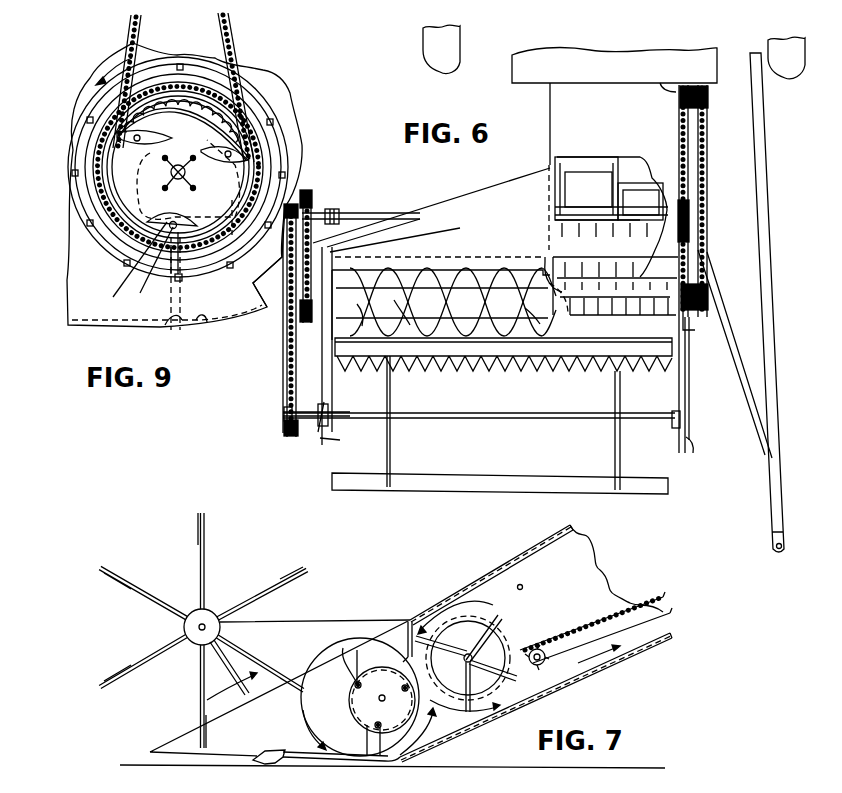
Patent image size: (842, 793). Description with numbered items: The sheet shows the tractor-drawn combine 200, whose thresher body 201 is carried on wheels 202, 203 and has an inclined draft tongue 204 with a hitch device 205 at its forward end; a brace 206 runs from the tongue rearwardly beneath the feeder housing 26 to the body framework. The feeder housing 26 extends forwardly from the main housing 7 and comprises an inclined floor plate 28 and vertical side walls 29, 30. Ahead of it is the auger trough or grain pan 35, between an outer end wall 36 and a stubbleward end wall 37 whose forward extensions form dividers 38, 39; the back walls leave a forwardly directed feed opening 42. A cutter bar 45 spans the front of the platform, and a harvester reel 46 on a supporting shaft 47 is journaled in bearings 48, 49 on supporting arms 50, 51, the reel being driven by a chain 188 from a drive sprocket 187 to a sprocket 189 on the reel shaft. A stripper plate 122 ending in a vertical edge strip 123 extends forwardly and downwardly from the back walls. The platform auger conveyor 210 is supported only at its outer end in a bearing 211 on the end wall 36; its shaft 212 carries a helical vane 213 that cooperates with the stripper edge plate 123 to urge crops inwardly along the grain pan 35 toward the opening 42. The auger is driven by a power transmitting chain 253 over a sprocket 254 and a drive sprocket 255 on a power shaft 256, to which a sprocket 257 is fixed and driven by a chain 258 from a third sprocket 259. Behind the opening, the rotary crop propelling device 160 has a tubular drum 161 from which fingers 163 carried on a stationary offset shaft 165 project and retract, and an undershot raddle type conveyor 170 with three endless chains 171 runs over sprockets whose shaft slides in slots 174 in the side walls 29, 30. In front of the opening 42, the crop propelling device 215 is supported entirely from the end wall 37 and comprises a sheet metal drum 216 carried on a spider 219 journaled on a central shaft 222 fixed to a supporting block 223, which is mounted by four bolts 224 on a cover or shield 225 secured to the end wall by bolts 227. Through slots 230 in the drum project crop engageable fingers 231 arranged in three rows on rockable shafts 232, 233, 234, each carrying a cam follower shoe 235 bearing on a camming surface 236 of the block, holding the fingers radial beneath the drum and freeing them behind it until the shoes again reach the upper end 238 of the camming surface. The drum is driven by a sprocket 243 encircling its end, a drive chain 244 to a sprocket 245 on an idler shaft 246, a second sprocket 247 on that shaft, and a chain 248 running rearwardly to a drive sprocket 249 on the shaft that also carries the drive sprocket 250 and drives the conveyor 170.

In FIG. 6, the feeder housing 26 is at (560, 112).
In FIG. 7, the feeder housing 26 is at (533, 548).
In FIG. 7, the floor plate 28 is at (615, 652).
In FIG. 6, the side wall 29 is at (549, 155).
In FIG. 7, the side wall 29 is at (598, 563).
In FIG. 6, the side wall 30 is at (690, 126).
In FIG. 9, the auger trough 35 is at (193, 330).
In FIG. 6, the auger trough 35 is at (436, 340).
In FIG. 7, the auger trough 35 is at (346, 760).
In FIG. 6, the end wall 36 is at (322, 368).
In FIG. 9, the end wall 37 is at (286, 110).
In FIG. 6, the end wall 37 is at (686, 366).
In FIG. 6, the divider 38 is at (334, 427).
In FIG. 6, the divider 39 is at (693, 452).
In FIG. 6, the feed opening 42 is at (548, 300).
In FIG. 7, the feed opening 42 is at (412, 758).
In FIG. 6, the cutter bar 45 is at (536, 360).
In FIG. 7, the cutter bar 45 is at (262, 764).
In FIG. 6, the harvester reel 46 is at (447, 487).
In FIG. 7, the harvester reel 46 is at (305, 569).
In FIG. 6, the supporting shaft 47 is at (455, 420).
In FIG. 7, the supporting shaft 47 is at (206, 624).
In FIG. 6, the bearing 48 is at (333, 411).
In FIG. 6, the bearing 49 is at (680, 420).
In FIG. 6, the supporting arm 50 is at (327, 392).
In FIG. 7, the supporting arm 50 is at (288, 620).
In FIG. 6, the supporting arm 51 is at (686, 390).
In FIG. 6, the stripper plate 122 is at (440, 310).
In FIG. 7, the vertical edge strip 123 is at (406, 635).
In FIG. 6, the rotary crop propelling device 160 is at (558, 239).
In FIG. 7, the tubular drum 161 is at (510, 629).
In FIG. 7, the fingers 163 is at (468, 680).
In FIG. 7, the stationary shaft 165 is at (465, 655).
In FIG. 6, the undershot raddle type conveyor 170 is at (626, 163).
In FIG. 7, the undershot raddle type conveyor 170 is at (593, 622).
In FIG. 6, the endless chains 171 is at (610, 196).
In FIG. 7, the slots 174 is at (538, 648).
In FIG. 6, the drive sprocket 187 is at (275, 256).
In FIG. 6, the chain 188 is at (287, 375).
In FIG. 6, the sprocket 189 is at (284, 432).
In FIG. 6, the combine 200 is at (768, 183).
In FIG. 6, the thresher body 201 is at (580, 58).
In FIG. 6, the wheel 202 is at (455, 58).
In FIG. 6, the wheel 203 is at (795, 72).
In FIG. 6, the draft tongue 204 is at (774, 316).
In FIG. 6, the hitch device 205 is at (783, 546).
In FIG. 6, the brace 206 is at (742, 378).
In FIG. 6, the platform auger conveyor 210 is at (394, 287).
In FIG. 6, the bearing 211 is at (305, 318).
In FIG. 6, the shaft 212 is at (444, 320).
In FIG. 6, the helical vane 213 is at (393, 320).
In FIG. 7, the helical vane 213 is at (253, 670).
In FIG. 9, the crop propelling device 215 is at (238, 106).
In FIG. 6, the crop propelling device 215 is at (608, 320).
In FIG. 7, the crop propelling device 215 is at (434, 733).
In FIG. 9, the sheet metal drum 216 is at (131, 259).
In FIG. 9, the spider 219 is at (170, 105).
In FIG. 9, the central shaft 222 is at (180, 166).
In FIG. 7, the central shaft 222 is at (376, 707).
In FIG. 9, the supporting block 223 is at (196, 170).
In FIG. 9, the bolts 224 is at (179, 184).
In FIG. 9, the cover 225 is at (145, 270).
In FIG. 9, the bolts 227 is at (184, 278).
In FIG. 6, the slots 230 is at (590, 303).
In FIG. 9, the crop engageable fingers 231 is at (288, 172).
In FIG. 7, the crop engageable fingers 231 is at (358, 650).
In FIG. 9, the rockable shaft 232 is at (280, 148).
In FIG. 7, the rockable shaft 232 is at (403, 687).
In FIG. 9, the rockable shaft 233 is at (79, 118).
In FIG. 7, the rockable shaft 233 is at (352, 660).
In FIG. 9, the rockable shaft 234 is at (176, 282).
In FIG. 7, the rockable shaft 234 is at (372, 728).
In FIG. 9, the cam follower shoe 235 is at (262, 112).
In FIG. 9, the camming surface 236 is at (110, 236).
In FIG. 9, the upper end 238 is at (115, 60).
In FIG. 9, the sprocket 243 is at (200, 105).
In FIG. 9, the drive chain 244 is at (235, 40).
In FIG. 6, the drive chain 244 is at (703, 326).
In FIG. 6, the sprocket 245 is at (708, 302).
In FIG. 6, the idler shaft 246 is at (710, 296).
In FIG. 6, the second sprocket 247 is at (700, 268).
In FIG. 6, the chain 248 is at (700, 230).
In FIG. 6, the drive sprocket 249 is at (705, 100).
In FIG. 6, the drive sprocket 250 is at (693, 88).
In FIG. 6, the power transmitting chain 253 is at (356, 240).
In FIG. 6, the sprocket 254 is at (288, 330).
In FIG. 6, the drive sprocket 255 is at (312, 200).
In FIG. 6, the power shaft 256 is at (364, 217).
In FIG. 7, the power shaft 256 is at (522, 585).
In FIG. 6, the sprocket 257 is at (693, 215).
In FIG. 6, the chain 258 is at (690, 170).
In FIG. 6, the third sprocket 259 is at (665, 88).
In FIG. 6, the main housing 7 is at (658, 108).